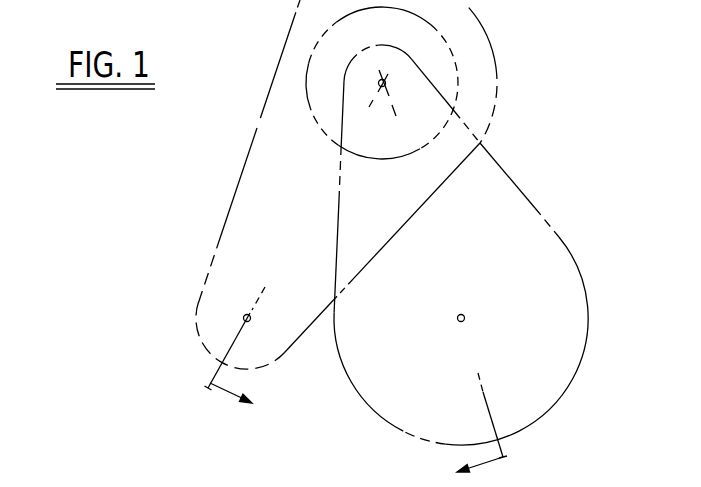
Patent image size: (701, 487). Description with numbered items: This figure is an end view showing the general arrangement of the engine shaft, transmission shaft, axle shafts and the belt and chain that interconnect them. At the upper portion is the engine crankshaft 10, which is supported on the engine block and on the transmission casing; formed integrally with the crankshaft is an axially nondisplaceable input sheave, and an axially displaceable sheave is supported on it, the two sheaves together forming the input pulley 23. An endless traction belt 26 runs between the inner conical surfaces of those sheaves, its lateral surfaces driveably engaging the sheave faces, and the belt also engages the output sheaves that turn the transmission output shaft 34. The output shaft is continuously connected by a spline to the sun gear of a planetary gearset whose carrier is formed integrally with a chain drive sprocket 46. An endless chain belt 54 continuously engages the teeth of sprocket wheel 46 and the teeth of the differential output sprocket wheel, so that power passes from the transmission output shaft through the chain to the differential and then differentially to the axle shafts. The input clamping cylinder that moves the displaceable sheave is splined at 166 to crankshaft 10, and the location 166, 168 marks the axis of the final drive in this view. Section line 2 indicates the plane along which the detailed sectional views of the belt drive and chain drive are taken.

The section line 2- 2 is at (356, 387).
The engine crankshaft 10 is at (250, 316).
The input pulley 23 is at (460, 13).
The endless traction belt 26 is at (486, 133).
The transmission output shaft 34 is at (386, 86).
The chain drive sprocket 46 is at (349, 15).
The endless chain belt 54 is at (530, 200).
The spline 166 is at (511, 306).
The roller axis 168 is at (464, 316).